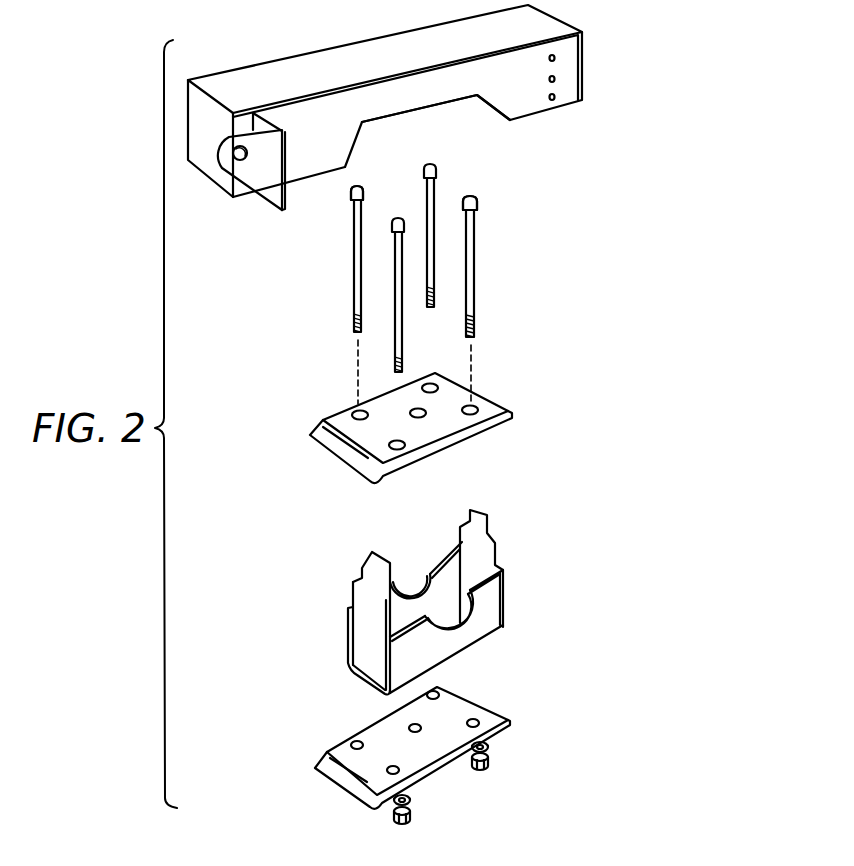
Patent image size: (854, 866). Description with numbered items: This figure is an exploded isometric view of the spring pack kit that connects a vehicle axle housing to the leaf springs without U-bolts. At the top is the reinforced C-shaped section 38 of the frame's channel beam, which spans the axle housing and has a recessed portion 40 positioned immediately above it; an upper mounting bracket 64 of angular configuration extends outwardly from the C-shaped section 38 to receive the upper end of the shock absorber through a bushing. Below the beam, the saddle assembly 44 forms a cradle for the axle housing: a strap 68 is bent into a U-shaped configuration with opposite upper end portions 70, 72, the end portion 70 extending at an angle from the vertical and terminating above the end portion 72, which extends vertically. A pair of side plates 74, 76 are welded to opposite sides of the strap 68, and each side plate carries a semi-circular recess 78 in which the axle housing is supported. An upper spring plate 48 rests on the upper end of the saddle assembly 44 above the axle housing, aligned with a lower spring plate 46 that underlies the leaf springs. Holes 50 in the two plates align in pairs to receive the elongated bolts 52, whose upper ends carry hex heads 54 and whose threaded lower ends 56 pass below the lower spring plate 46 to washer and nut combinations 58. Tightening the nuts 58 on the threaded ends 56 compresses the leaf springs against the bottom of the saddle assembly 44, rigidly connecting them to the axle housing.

The reinforced C-shaped section 38 is at (614, 78).
The recessed portion 40 is at (460, 100).
The upper mounting bracket 64 is at (263, 197).
The bolts 52 is at (352, 218).
The hex heads 54 is at (362, 187).
The threaded lower ends 56 is at (355, 320).
The upper spring plate 48 is at (490, 403).
The holes 50 is at (353, 410).
The saddle assembly 44 is at (471, 585).
The strap upper end portion 70 is at (370, 567).
The strap upper end portion 72 is at (480, 513).
The side plate 74 is at (348, 618).
The strap 68 is at (365, 652).
The side plate 76 is at (468, 643).
The semi-circular recess 78 is at (420, 573).
The lower spring plate 46 is at (480, 705).
The washer and nut combinations 58 is at (492, 758).